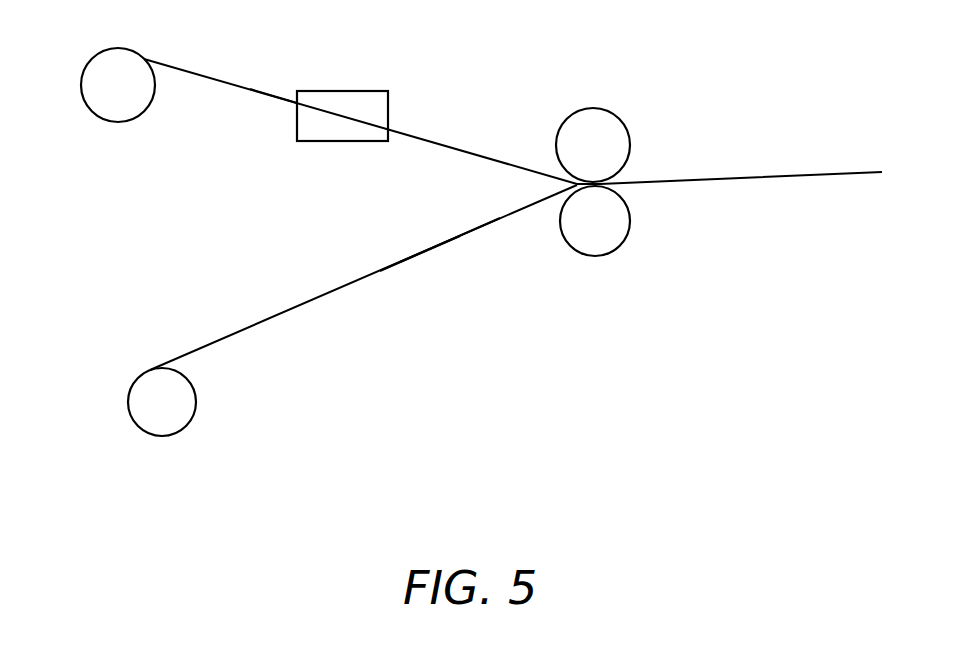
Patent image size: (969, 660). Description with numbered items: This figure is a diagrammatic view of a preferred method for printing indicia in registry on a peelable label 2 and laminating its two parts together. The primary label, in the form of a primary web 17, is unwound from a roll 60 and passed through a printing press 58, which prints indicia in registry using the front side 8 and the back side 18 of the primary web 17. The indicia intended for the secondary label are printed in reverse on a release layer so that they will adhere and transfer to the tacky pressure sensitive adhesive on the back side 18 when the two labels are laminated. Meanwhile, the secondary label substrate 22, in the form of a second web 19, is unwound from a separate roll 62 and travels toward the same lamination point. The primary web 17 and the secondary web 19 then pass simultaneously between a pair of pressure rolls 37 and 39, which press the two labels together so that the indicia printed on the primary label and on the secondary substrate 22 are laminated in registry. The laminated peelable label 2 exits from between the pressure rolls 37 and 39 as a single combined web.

The peelable label 2 is at (787, 173).
The front side 8 is at (263, 92).
The web 17 is at (203, 73).
The back side 18 is at (455, 236).
The web 19 is at (213, 345).
The secondary substrate 22 is at (422, 255).
The pressure roll 37 is at (606, 109).
The pressure roll 39 is at (612, 253).
The printing press 58 is at (372, 91).
The roll 60 is at (97, 63).
The roll 62 is at (183, 430).